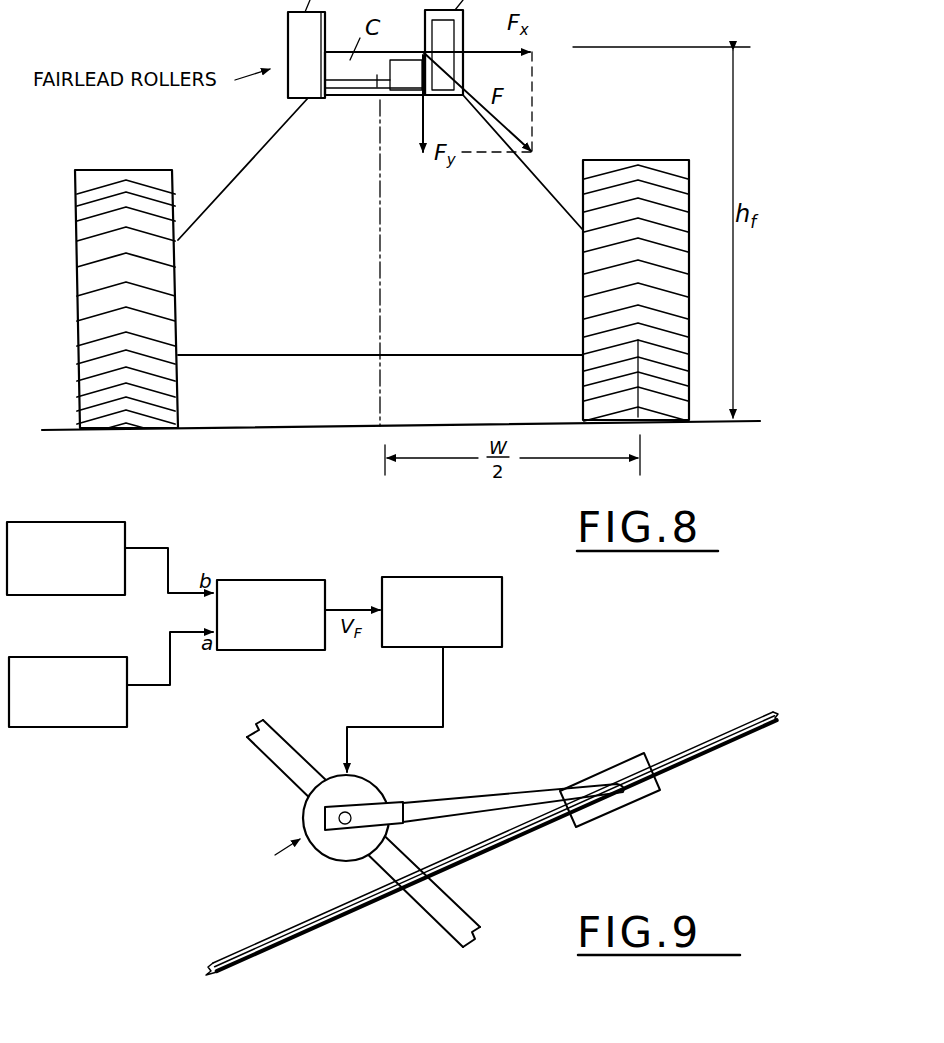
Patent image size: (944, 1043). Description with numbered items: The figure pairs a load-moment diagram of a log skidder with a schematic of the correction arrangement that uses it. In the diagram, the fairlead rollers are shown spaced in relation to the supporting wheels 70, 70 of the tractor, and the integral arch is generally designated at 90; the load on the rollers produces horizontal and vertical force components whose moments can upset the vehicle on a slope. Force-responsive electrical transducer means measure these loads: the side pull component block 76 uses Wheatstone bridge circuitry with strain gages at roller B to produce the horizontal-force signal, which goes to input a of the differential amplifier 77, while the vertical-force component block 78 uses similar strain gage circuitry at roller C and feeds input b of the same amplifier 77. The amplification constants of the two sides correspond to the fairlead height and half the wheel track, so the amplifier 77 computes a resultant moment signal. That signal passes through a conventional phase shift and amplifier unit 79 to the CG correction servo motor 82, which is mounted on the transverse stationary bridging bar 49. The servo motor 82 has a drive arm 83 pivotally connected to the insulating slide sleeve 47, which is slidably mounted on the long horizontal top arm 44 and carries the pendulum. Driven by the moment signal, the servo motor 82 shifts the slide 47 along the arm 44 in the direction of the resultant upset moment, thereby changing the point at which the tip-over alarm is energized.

In FIG. 8, the supporting wheels 70 is at (78, 368).
In FIG. 8, the side pull component block 76 is at (440, 38).
In FIG. 9, the side pull component block 76 is at (46, 658).
In FIG. 8, the Fy component block 78 is at (415, 92).
In FIG. 9, the Fy component block 78 is at (62, 522).
In FIG. 8, the integral arch 90 is at (247, 157).
In FIG. 9, the differential amplifier 77 is at (280, 578).
In FIG. 9, the phase shift and amplifier unit 79 is at (448, 575).
In FIG. 9, the servo motor 82 is at (303, 813).
In FIG. 9, the drive arm 83 is at (440, 800).
In FIG. 9, the top arm 44 is at (705, 746).
In FIG. 9, the insulating slide sleeve 47 is at (620, 768).
In FIG. 9, the bridging bar 49 is at (470, 916).